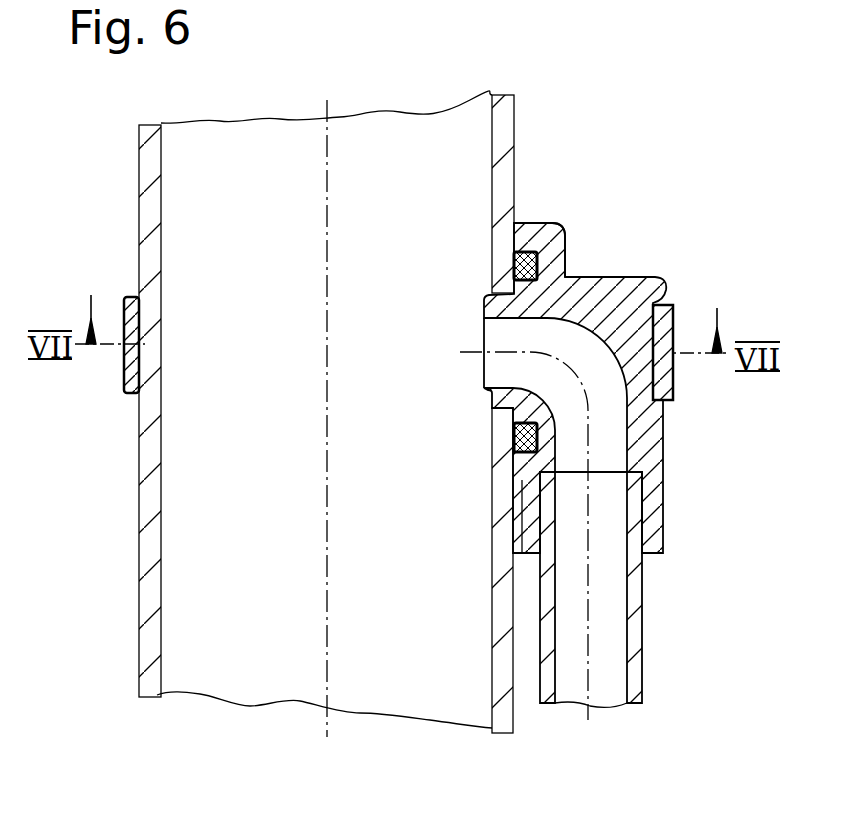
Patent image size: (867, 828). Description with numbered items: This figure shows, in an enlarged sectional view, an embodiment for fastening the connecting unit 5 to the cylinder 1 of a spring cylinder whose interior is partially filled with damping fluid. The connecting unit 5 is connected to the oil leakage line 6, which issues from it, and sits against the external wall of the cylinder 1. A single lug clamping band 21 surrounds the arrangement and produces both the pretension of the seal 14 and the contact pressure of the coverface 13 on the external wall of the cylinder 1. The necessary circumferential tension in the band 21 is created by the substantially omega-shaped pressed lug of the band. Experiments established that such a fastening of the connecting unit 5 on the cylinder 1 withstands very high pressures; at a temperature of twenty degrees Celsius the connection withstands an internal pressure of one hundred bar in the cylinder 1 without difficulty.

The cylinder 1 is at (502, 117).
The connecting unit 5 is at (605, 298).
The oil leakage line 6 is at (633, 615).
The coverface 13 is at (513, 212).
The seal 14 is at (527, 258).
The single lug clamping band 21 is at (672, 380).